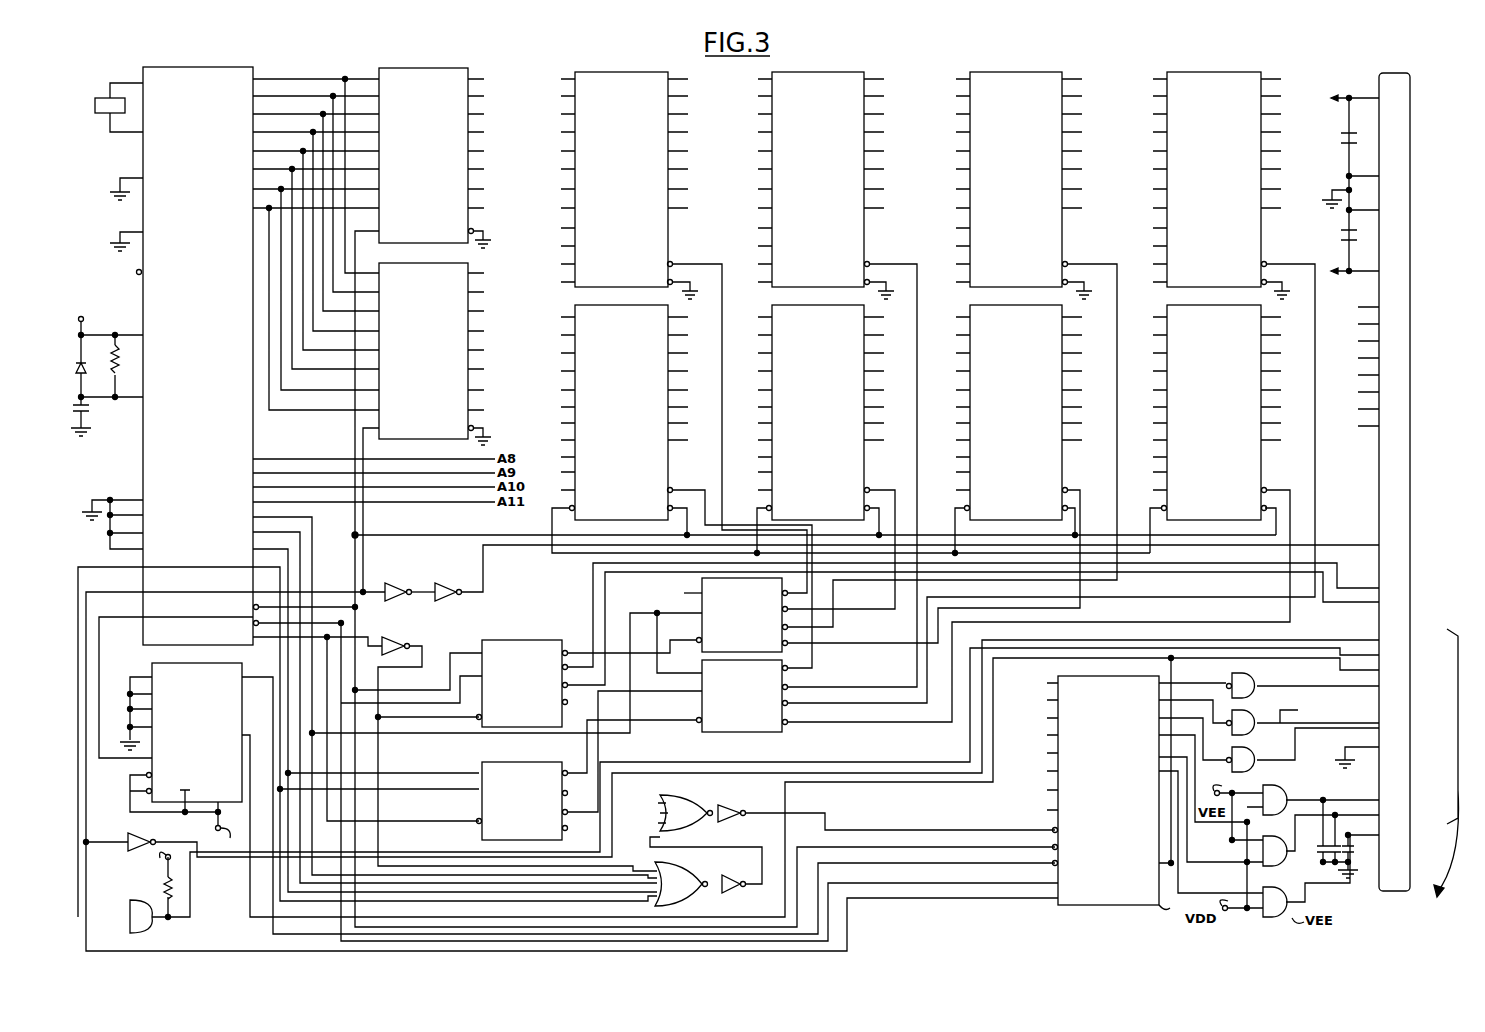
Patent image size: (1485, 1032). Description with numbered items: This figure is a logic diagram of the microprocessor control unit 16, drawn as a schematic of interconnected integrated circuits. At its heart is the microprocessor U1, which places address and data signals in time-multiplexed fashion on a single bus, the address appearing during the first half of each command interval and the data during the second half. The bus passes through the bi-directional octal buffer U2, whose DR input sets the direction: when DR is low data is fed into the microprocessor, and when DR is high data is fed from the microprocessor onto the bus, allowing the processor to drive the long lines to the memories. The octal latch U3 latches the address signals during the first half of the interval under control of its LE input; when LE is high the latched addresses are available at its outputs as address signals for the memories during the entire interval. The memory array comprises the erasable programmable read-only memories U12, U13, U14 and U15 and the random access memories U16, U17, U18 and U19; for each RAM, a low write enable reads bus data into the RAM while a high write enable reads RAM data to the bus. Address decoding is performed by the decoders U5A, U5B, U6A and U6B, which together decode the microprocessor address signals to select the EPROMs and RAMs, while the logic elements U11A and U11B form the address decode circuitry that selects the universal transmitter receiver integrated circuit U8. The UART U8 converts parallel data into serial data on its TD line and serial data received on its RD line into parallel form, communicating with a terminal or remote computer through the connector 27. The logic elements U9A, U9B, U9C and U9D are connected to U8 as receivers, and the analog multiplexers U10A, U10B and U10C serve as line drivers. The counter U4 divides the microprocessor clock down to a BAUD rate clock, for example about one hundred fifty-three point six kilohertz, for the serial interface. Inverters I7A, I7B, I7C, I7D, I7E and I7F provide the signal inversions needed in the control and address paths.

The microprocessor U1 is at (190, 67).
The bi-directional octal buffer U2 is at (405, 68).
The octal latch U3 is at (379, 424).
The counter U4 is at (152, 670).
The decoder U5A is at (508, 640).
The decoder U5B is at (482, 830).
The decoder U6A is at (702, 582).
The decoder U6B is at (722, 732).
The universal transmitter receiver integrated circuit U8 is at (1102, 908).
The logic element U9A is at (1250, 690).
The logic element U9B is at (1269, 717).
The logic element U9C is at (1250, 770).
The logic element U9D is at (150, 920).
The analog multiplexer U10A is at (1283, 795).
The analog multiplexer U10B is at (1290, 870).
The analog multiplexer U10C is at (1276, 915).
The logic element U11A is at (688, 800).
The logic element U11B is at (684, 894).
The erasable programmable read-only memory U12 is at (618, 90).
The erasable programmable read-only memory U13 is at (810, 90).
The erasable programmable read-only memory U14 is at (992, 90).
The erasable programmable read-only memory U15 is at (1187, 90).
The random access memory U16 is at (645, 464).
The random access memory U17 is at (843, 464).
The random access memory U18 is at (1040, 464).
The random access memory U19 is at (1236, 464).
The inverter I7A is at (125, 860).
The inverter I7B is at (733, 806).
The inverter I7C is at (745, 866).
The inverter I7D is at (400, 582).
The inverter I7E is at (452, 582).
The inverter I7F is at (404, 650).
The microprocessor control unit 16 is at (1387, 453).
The connector 27 is at (1425, 790).